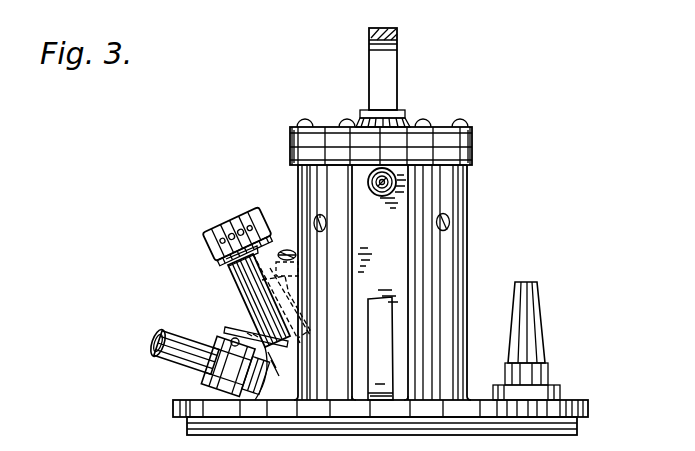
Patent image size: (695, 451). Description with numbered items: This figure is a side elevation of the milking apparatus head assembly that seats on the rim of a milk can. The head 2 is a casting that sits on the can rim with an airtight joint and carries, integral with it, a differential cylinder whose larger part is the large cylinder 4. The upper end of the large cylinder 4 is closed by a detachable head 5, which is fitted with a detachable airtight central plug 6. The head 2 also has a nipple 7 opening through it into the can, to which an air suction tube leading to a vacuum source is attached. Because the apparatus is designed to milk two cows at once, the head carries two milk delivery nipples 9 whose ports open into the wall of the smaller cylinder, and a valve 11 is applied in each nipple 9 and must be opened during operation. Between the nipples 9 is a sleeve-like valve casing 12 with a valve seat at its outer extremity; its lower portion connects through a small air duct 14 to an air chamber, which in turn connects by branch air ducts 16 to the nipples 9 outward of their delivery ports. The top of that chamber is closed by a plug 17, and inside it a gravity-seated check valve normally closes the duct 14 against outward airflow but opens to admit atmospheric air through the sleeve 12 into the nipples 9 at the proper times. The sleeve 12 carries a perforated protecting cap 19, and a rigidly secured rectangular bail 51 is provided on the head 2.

The head 2 is at (565, 400).
The large cylinder 4 is at (455, 186).
The detachable head 5 is at (432, 135).
The airtight central plug 6 is at (396, 110).
The nipple 7 is at (528, 342).
The milk delivery nipple 9 is at (227, 283).
The valve 11 is at (196, 372).
The sleeve-like valve casing 12 is at (238, 295).
The air duct 14 is at (301, 298).
The branch air duct 16 is at (300, 332).
The plug 17 is at (287, 248).
The perforated protecting cap 19 is at (230, 221).
The rectangular bail 51 is at (378, 61).